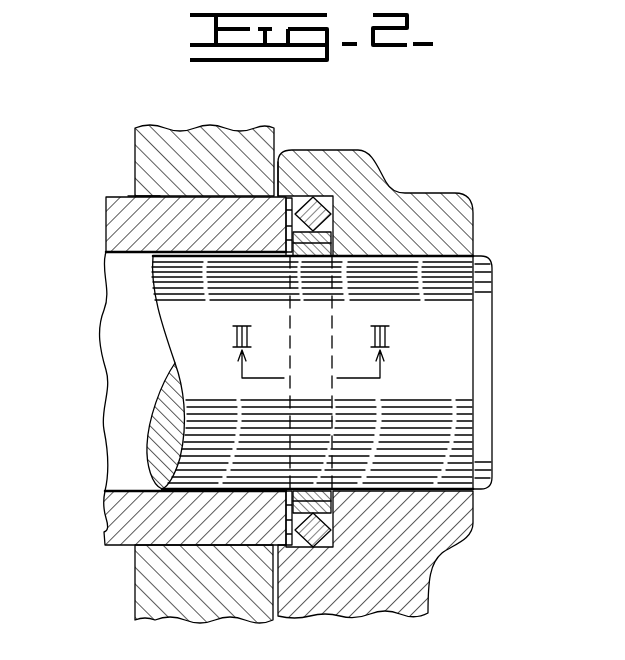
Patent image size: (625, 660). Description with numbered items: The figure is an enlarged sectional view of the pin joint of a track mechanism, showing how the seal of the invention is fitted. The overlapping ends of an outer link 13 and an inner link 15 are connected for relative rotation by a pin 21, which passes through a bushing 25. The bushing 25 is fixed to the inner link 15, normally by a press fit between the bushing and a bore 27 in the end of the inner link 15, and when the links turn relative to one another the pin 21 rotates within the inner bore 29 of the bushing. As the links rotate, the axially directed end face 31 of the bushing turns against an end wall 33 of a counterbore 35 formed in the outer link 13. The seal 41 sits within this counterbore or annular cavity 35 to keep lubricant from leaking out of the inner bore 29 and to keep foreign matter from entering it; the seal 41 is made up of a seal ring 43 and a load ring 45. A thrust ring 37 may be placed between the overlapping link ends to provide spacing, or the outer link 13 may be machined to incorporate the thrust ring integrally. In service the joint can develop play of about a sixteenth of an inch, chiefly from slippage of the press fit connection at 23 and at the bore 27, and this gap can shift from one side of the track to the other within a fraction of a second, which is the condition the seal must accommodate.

The outer link 13 is at (385, 588).
The inner link 15 is at (157, 598).
The pin 21 is at (483, 387).
The press fit connection 23 is at (490, 262).
The bushing 25 is at (112, 224).
The bore 27 is at (153, 197).
The inner bore 29 is at (107, 255).
The end face 31 is at (287, 259).
The end wall 33 is at (333, 228).
The counterbore 35 is at (284, 192).
The thrust ring 37 is at (320, 250).
The seal 41 is at (312, 170).
The seal ring 43 is at (330, 532).
The load ring 45 is at (298, 547).